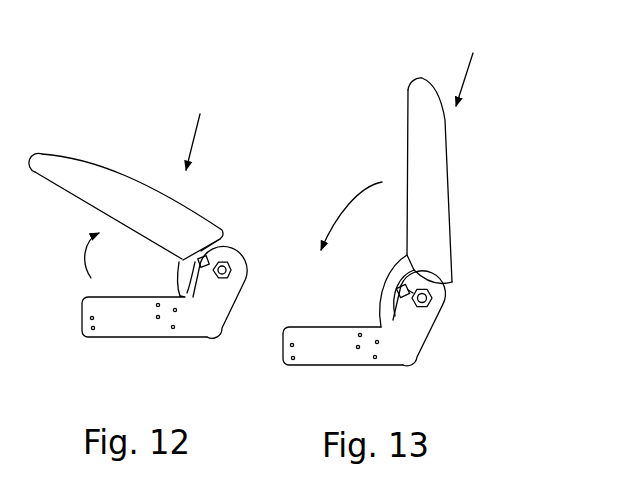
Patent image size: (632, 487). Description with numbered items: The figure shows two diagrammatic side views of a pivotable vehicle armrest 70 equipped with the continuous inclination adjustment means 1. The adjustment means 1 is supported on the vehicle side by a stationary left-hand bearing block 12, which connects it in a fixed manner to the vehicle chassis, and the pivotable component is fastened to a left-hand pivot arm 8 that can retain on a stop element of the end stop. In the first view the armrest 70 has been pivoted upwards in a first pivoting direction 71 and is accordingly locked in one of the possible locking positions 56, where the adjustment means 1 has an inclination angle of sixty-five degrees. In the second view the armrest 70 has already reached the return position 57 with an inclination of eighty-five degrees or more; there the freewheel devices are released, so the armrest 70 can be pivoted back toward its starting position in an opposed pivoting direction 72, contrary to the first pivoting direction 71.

In FIG. 12, the continuous inclination adjustment means 1 is at (238, 235).
In FIG. 13, the continuous inclination adjustment means 1 is at (448, 313).
In FIG. 12, the left-hand pivot arm 8 is at (177, 267).
In FIG. 13, the left-hand pivot arm 8 is at (393, 280).
In FIG. 12, the left-hand bearing block 12 is at (143, 337).
In FIG. 13, the left-hand bearing block 12 is at (350, 353).
In FIG. 12, the locking position 56 is at (199, 131).
In FIG. 13, the return position 57 is at (471, 68).
In FIG. 12, the pivotable vehicle armrest 70 is at (127, 193).
In FIG. 13, the pivotable vehicle armrest 70 is at (448, 163).
In FIG. 12, the first pivoting direction 71 is at (85, 256).
In FIG. 13, the opposed pivoting direction 72 is at (345, 203).